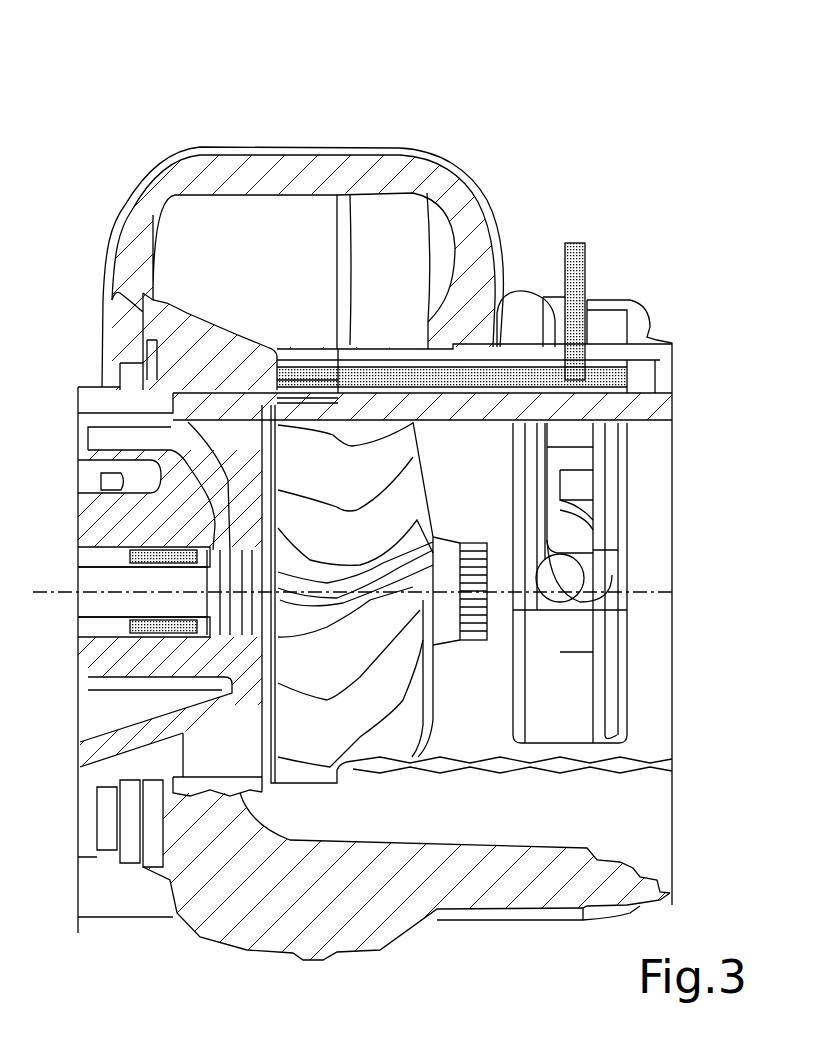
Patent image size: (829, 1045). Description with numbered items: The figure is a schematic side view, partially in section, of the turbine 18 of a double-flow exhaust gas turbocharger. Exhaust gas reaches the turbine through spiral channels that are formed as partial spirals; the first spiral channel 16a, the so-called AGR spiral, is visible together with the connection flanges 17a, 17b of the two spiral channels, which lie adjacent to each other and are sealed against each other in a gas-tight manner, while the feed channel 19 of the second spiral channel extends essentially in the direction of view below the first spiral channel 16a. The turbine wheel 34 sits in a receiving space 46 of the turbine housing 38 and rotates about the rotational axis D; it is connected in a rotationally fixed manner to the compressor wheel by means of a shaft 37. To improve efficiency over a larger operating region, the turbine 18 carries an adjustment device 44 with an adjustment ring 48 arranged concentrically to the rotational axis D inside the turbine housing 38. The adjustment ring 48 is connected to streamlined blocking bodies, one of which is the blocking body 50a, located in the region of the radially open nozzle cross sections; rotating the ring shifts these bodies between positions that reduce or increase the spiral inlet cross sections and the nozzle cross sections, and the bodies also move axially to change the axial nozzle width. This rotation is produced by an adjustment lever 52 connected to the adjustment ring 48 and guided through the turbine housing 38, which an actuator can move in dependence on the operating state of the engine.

The turbine 18 is at (607, 130).
The connection flange 17a is at (160, 178).
The connection flange 17b is at (472, 200).
The first spiral channel 16a is at (293, 228).
The feed channel 19 is at (405, 228).
The turbine housing 38 is at (503, 232).
The blocking body 50a is at (290, 347).
The adjustment ring 48 is at (518, 298).
The adjustment lever 52 is at (583, 243).
The adjustment device 44 is at (650, 285).
The receiving space 46 is at (633, 462).
The rotational axis D is at (655, 587).
The shaft 37 is at (95, 602).
The turbine wheel 34 is at (403, 733).